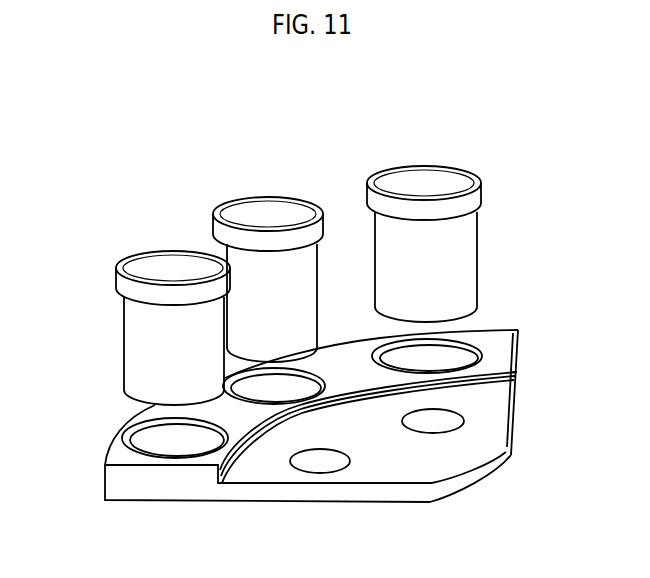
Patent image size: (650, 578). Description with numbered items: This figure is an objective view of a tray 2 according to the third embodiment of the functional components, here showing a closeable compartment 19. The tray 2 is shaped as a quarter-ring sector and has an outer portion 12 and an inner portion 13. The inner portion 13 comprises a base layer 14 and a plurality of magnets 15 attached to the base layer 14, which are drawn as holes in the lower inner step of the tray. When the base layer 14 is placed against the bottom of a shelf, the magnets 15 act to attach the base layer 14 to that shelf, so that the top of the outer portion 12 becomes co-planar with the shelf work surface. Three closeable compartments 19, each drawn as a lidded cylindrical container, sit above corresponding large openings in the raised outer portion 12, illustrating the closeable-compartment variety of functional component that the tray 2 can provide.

The tray 2 is at (57, 510).
The outer portion 12 is at (106, 508).
The inner portion 13 is at (513, 393).
The base layer 14 is at (512, 392).
The magnets 15 is at (432, 422).
The closeable compartment 19 is at (410, 188).